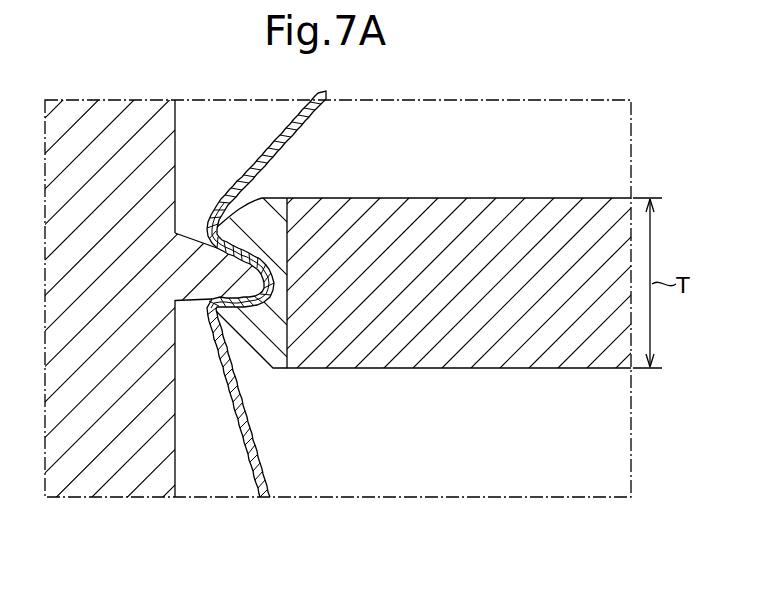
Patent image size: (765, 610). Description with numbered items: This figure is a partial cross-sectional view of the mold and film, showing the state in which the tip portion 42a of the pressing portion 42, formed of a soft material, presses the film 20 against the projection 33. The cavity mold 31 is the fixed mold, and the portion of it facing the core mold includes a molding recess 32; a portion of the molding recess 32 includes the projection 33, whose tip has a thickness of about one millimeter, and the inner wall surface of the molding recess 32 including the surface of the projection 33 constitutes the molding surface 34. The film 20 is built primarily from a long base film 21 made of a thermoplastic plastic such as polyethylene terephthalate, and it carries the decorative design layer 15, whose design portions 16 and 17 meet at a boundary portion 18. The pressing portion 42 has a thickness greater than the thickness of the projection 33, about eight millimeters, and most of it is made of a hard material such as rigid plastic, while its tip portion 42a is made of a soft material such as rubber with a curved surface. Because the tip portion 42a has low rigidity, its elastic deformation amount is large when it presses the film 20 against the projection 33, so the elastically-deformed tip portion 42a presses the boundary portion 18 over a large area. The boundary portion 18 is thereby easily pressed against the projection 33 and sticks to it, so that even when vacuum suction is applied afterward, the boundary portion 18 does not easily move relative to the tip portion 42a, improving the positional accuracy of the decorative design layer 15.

The decorative design layer 15 is at (314, 111).
The design portion 16 is at (254, 438).
The design portion 17 is at (303, 130).
The boundary portion 18 is at (234, 309).
The film 20 is at (297, 295).
The base film 21 is at (327, 98).
The cavity mold 31 is at (78, 497).
The molding recess 32 is at (186, 436).
The projection 33 is at (184, 306).
The molding surface 34 is at (178, 497).
The pressing portion 42 is at (403, 370).
The tip portion 42a is at (266, 197).